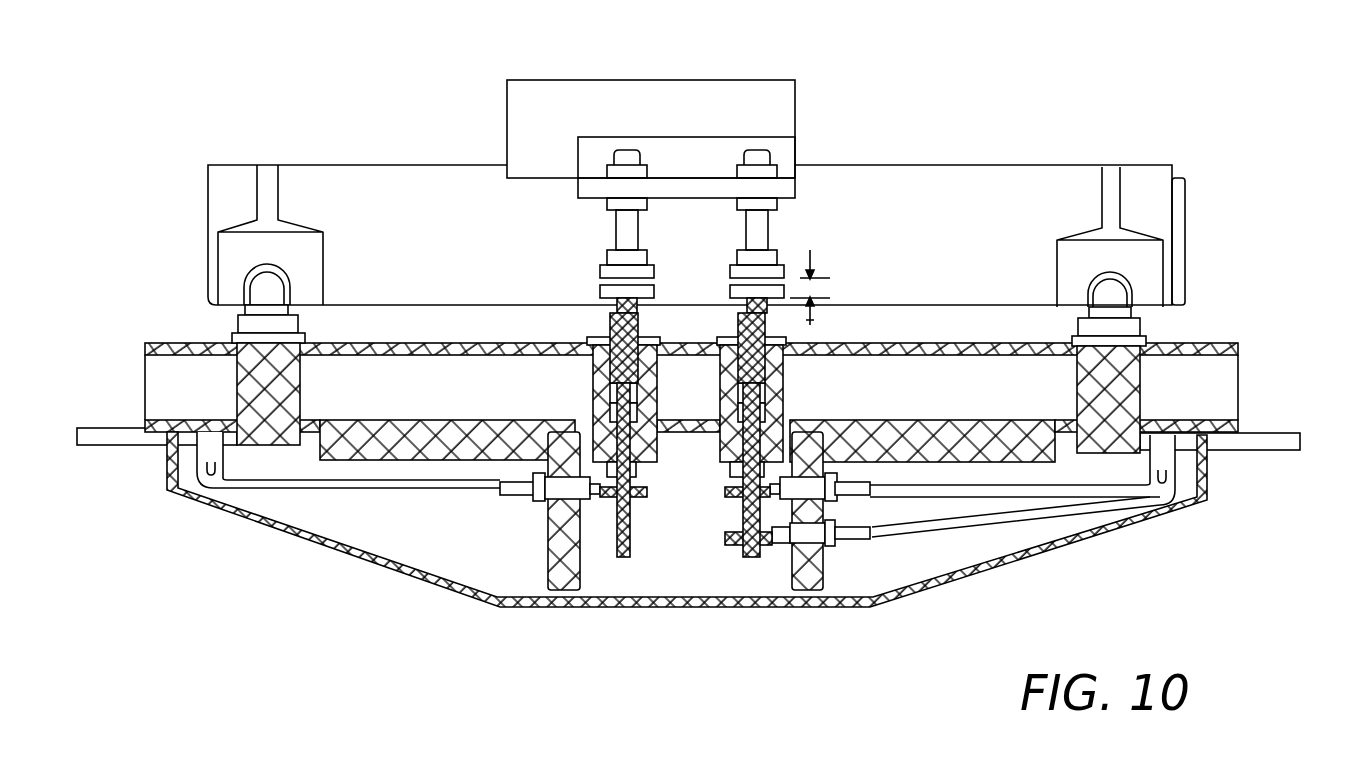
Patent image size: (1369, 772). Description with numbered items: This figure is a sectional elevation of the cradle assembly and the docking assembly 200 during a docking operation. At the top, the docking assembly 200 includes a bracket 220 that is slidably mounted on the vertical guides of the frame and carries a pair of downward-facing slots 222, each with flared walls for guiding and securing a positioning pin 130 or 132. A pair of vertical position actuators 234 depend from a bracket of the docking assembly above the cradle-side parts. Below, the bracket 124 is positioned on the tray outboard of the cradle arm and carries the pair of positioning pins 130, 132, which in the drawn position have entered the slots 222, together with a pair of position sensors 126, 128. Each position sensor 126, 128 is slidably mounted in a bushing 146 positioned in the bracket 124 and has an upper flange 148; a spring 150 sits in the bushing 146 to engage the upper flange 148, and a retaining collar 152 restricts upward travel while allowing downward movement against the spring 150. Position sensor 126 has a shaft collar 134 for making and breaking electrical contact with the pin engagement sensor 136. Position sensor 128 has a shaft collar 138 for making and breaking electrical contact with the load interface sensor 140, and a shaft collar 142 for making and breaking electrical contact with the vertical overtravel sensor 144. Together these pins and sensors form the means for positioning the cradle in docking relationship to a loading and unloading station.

The docking assembly 200 is at (981, 165).
The bracket 220 is at (1000, 215).
The downward-facing slot 222 is at (300, 258).
The vertical position actuator 234 is at (600, 262).
The positioning pin 130 is at (255, 288).
The positioning pin 132 is at (1120, 296).
The position sensor 126 is at (610, 325).
The position sensor 128 is at (767, 325).
The bushing 146 is at (593, 392).
The upper flange 148 is at (733, 378).
The spring 150 is at (733, 405).
The retaining collar 152 is at (733, 471).
The shaft collar 142 is at (730, 500).
The shaft collar 134 is at (628, 508).
The shaft collar 138 is at (750, 558).
The pin engagement sensor 136 is at (587, 498).
The load interface sensor 140 is at (772, 543).
The vertical overtravel sensor 144 is at (746, 502).
The bracket 124 is at (1240, 380).